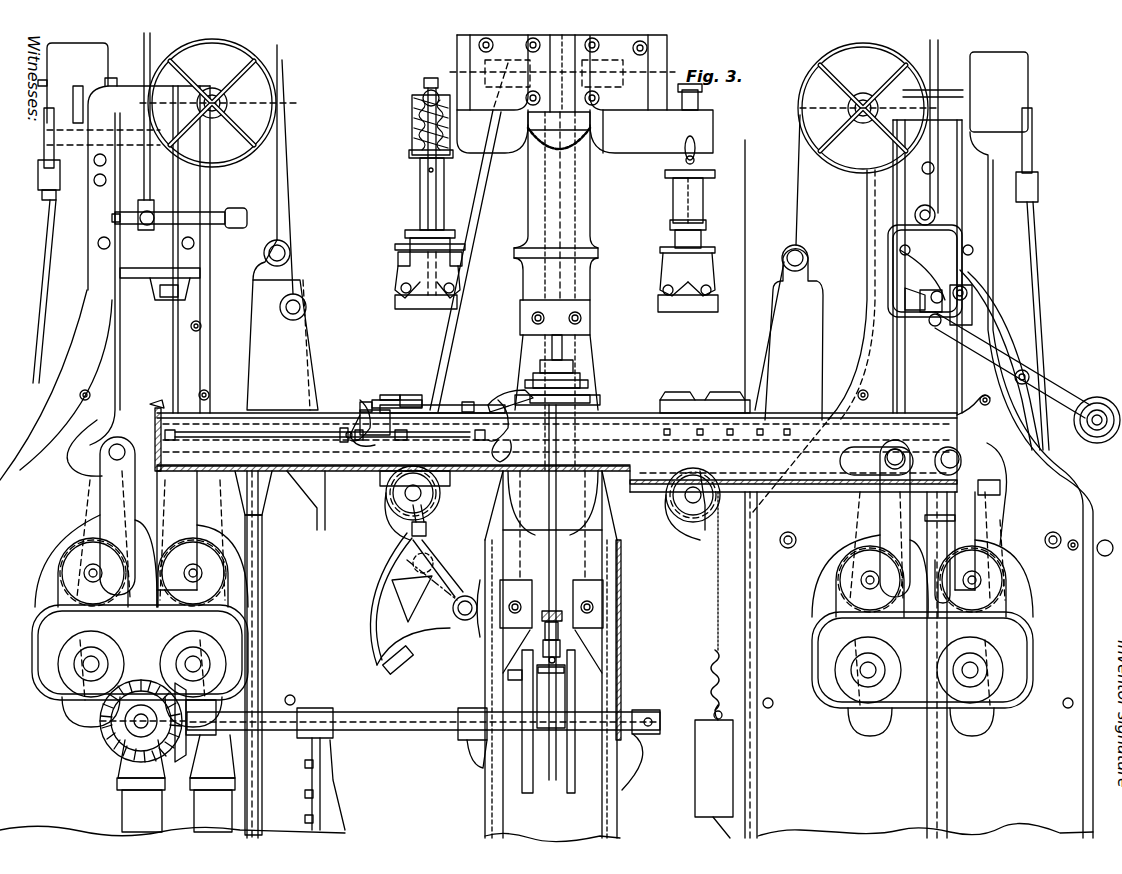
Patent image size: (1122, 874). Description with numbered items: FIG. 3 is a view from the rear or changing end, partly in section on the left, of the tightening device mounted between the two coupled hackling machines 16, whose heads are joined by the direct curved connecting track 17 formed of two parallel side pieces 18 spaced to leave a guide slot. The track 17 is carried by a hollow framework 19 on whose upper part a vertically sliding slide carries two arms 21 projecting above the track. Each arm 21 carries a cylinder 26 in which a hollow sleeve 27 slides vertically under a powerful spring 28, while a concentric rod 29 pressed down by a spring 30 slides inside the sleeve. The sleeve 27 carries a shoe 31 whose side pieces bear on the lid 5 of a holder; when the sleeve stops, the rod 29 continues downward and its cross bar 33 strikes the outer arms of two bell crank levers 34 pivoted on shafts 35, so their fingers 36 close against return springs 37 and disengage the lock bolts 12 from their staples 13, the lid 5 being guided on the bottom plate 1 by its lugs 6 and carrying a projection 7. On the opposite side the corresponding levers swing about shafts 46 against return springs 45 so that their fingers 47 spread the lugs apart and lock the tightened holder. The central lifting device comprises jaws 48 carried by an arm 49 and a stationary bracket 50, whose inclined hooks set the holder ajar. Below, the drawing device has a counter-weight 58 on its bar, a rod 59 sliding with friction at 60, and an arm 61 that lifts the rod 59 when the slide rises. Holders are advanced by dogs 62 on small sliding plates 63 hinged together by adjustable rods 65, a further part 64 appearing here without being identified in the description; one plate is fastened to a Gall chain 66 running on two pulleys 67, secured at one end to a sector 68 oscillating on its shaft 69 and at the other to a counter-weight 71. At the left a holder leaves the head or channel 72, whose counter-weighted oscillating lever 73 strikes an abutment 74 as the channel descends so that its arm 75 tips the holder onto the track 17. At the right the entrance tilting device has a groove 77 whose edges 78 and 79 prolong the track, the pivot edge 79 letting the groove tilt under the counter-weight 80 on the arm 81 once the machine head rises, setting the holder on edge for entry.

The bottom plate 1 is at (612, 400).
The lid 5 is at (412, 398).
The guide lug 6 is at (375, 410).
The projection 7 is at (145, 345).
The lock bolt 12 is at (392, 400).
The staple 13 is at (385, 402).
The hackling machine 16 is at (934, 439).
The direct connecting track 17 is at (581, 616).
The parallel piece 18 is at (153, 408).
The hollow frame-work 19 is at (598, 272).
The arm 21 is at (491, 108).
The cylinder 26 is at (414, 112).
The hollow sleeve 27 is at (420, 191).
The spring 28 is at (412, 132).
The concentrical rod 29 is at (418, 172).
The spring 30 is at (425, 96).
The shoe 31 is at (405, 244).
The cross bar 33 is at (398, 262).
The bell crank lever 34 is at (398, 284).
The shaft 35 is at (412, 232).
The finger 36 is at (398, 296).
The return spring 37 is at (395, 251).
The return spring 45 is at (660, 258).
The shaft 46 is at (665, 272).
The finger 47 is at (665, 292).
The jaws 48 is at (533, 373).
The arm 49 is at (575, 342).
The stationary bracket 50 is at (590, 320).
The counter-weight 58 is at (545, 730).
The rod 59 is at (558, 628).
The friction slide 60 is at (562, 612).
The arm 61 is at (560, 645).
The dog 62 is at (330, 418).
The small sliding plate 63 is at (350, 440).
The rod 64 is at (317, 448).
The adjustable rod 65 is at (440, 445).
The Gall chain 66 is at (455, 490).
The pulley 67 is at (430, 505).
The sector 68 is at (372, 632).
The shaft 69 is at (465, 625).
The counter-weight 71 is at (714, 771).
The head or channel 72 is at (182, 280).
The oscillating lever 73 is at (195, 218).
The abutment 74 is at (198, 327).
The arm 75 is at (120, 262).
The groove 77 is at (972, 318).
The edge 78 is at (965, 290).
The edge 79 is at (936, 325).
The counter-weight 80 is at (1098, 400).
The arm 81 is at (990, 360).